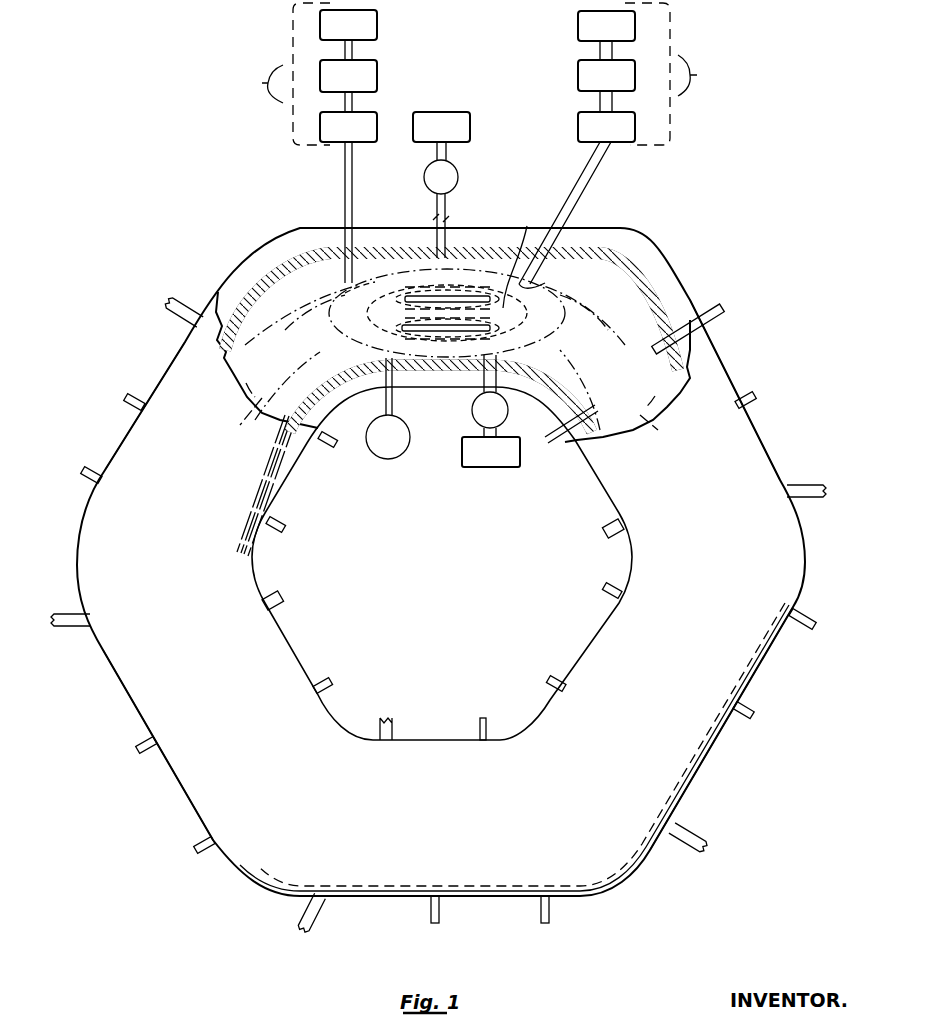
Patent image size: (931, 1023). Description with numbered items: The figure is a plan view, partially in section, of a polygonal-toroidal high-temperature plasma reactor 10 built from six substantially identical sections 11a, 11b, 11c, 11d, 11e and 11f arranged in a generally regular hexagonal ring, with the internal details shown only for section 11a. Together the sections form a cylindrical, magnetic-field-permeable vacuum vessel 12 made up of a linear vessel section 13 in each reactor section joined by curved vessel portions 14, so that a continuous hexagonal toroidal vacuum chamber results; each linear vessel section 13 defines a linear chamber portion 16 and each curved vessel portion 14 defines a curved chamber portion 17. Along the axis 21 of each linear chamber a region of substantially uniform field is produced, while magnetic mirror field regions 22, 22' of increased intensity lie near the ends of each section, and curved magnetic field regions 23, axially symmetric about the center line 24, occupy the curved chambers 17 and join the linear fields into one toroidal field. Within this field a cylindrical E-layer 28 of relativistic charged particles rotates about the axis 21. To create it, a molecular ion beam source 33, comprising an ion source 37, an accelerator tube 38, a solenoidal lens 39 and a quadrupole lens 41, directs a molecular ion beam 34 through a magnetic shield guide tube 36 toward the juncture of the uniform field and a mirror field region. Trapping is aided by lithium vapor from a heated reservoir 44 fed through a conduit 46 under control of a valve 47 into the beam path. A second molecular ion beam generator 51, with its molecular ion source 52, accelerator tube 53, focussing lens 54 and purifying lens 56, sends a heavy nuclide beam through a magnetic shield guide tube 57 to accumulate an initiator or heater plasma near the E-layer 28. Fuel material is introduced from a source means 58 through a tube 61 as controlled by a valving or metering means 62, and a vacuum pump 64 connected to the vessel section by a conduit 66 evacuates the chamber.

The polygonal-toroidal high-temperature plasma reactor 10 is at (748, 323).
The reactor section 11a is at (478, 204).
The reactor section 11b is at (742, 382).
The reactor section 11c is at (706, 787).
The reactor section 11d is at (385, 905).
The reactor section 11e is at (112, 680).
The reactor section 11f is at (128, 437).
The vacuum vessel 12 is at (333, 240).
The linear vessel section 13 is at (404, 245).
The curved vessel portion 14 is at (268, 260).
The linear chamber portion 16 is at (356, 245).
The curved chamber portion 17 is at (443, 288).
The axis 21 is at (451, 316).
The magnetic mirror field region 22 is at (404, 301).
The magnetic mirror field region 22' is at (467, 313).
The curved magnetic field region 23 is at (433, 313).
The center line 24 is at (447, 357).
The E-layer 28 is at (478, 294).
The molecular ion beam source 33 is at (676, 74).
The molecular ion beam 34 is at (537, 282).
The magnetic shield guide tube 36 is at (578, 196).
The ion source 37 is at (606, 26).
The accelerator tube 38 is at (596, 48).
The solenoidal lens 39 is at (606, 75).
The quadrupole lens 41 is at (606, 127).
The heated reservoir 44 is at (491, 447).
The conduit 46 is at (470, 380).
The valve 47 is at (490, 391).
The second molecular ion beam generator 51 is at (283, 74).
The molecular ion source 52 is at (348, 25).
The accelerator tube 53 is at (357, 48).
The focussing lens 54 is at (348, 76).
The purifying lens 56 is at (348, 127).
The magnetic shield guide tube 57 is at (344, 192).
The fuel source means 58 is at (441, 136).
The tube 61 is at (447, 214).
The valving or metering means 62 is at (424, 176).
The vacuum pump 64 is at (408, 442).
The conduit 66 is at (393, 402).